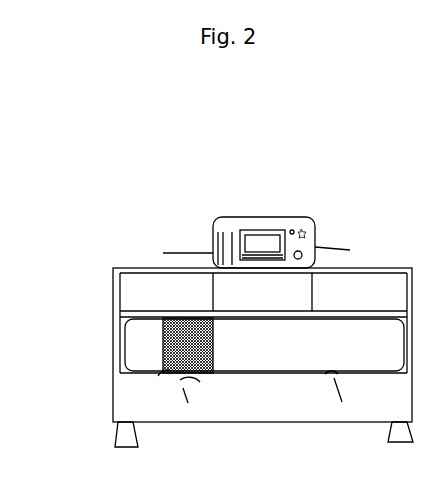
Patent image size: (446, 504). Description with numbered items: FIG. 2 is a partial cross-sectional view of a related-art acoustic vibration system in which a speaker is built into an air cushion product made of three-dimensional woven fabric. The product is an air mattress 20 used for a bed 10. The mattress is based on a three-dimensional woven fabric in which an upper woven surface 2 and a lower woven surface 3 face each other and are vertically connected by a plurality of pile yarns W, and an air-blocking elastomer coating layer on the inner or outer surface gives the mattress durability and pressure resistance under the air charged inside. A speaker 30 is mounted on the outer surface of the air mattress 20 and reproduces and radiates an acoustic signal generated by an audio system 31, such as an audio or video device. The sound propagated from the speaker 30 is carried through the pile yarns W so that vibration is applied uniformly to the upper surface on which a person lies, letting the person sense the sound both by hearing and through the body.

The upper woven surface 2 is at (160, 312).
The lower woven surface 3 is at (222, 373).
The bed 10 is at (106, 291).
The air mattress 20 is at (136, 350).
The speaker 30 is at (196, 377).
The audio system 31 is at (228, 218).
The pile yarns W is at (168, 358).